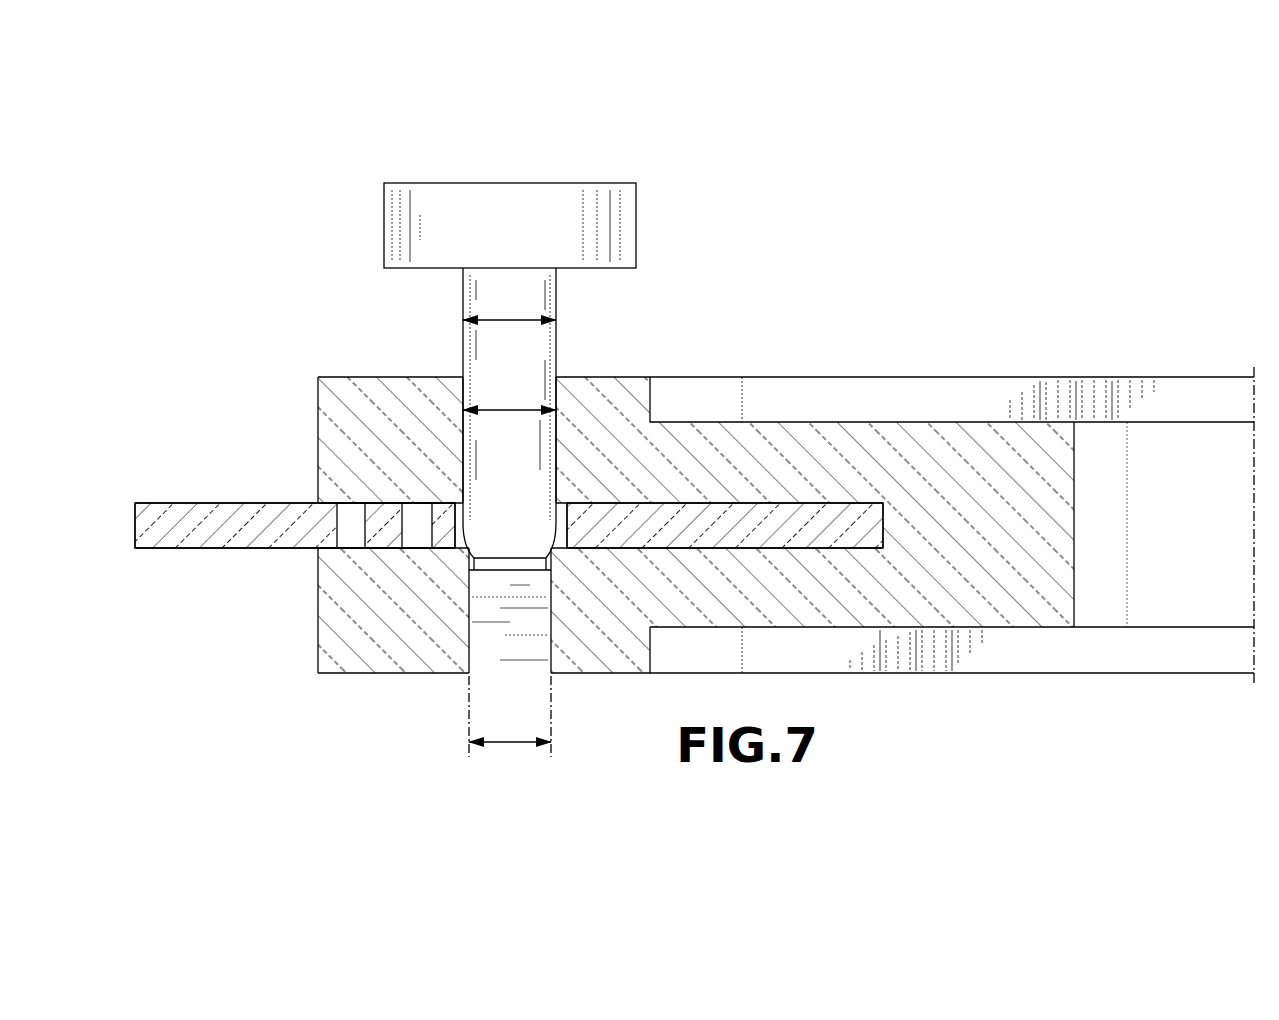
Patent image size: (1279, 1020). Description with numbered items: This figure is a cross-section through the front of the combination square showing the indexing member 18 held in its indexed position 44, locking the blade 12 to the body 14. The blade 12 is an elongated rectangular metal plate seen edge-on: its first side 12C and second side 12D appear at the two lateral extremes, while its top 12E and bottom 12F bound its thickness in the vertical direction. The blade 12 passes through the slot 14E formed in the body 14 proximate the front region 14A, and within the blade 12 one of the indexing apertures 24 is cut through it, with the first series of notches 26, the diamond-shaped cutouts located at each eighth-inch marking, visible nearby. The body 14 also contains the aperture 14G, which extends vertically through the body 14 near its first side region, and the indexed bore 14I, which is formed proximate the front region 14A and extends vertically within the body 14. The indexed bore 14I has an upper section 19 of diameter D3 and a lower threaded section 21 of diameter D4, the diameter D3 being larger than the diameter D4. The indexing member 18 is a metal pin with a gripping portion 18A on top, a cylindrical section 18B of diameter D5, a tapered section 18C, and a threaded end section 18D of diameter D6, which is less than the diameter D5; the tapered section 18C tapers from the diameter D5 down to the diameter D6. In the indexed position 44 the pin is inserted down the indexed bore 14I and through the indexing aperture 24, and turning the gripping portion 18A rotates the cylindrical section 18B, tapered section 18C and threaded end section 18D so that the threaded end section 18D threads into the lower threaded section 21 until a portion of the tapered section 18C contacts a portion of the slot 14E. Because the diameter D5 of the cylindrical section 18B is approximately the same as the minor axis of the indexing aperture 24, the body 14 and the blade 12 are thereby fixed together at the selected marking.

The blade 12 is at (510, 542).
The first side 12C is at (133, 516).
The second side 12D is at (887, 524).
The top 12E is at (190, 503).
The bottom 12F is at (188, 550).
The body 14 is at (746, 495).
The front region 14A is at (305, 422).
The slot 14E is at (769, 528).
The aperture 14G is at (1160, 535).
The indexed bore 14I is at (468, 391).
The indexing member 18 is at (527, 427).
The gripping portion 18A is at (465, 212).
The cylindrical section 18B is at (548, 345).
The tapered section 18C is at (517, 552).
The threaded end section 18D is at (537, 628).
The upper section 19 is at (557, 440).
The lower threaded section 21 is at (470, 603).
The indexing apertures 24 is at (458, 518).
The first series of notches 26 is at (385, 540).
The indexed position 44 is at (658, 220).
The diameter of upper section D3 is at (509, 428).
The diameter of lower threaded section D4 is at (510, 745).
The diameter of cylindrical section D5 is at (509, 304).
The diameter of threaded end section D6 is at (510, 739).